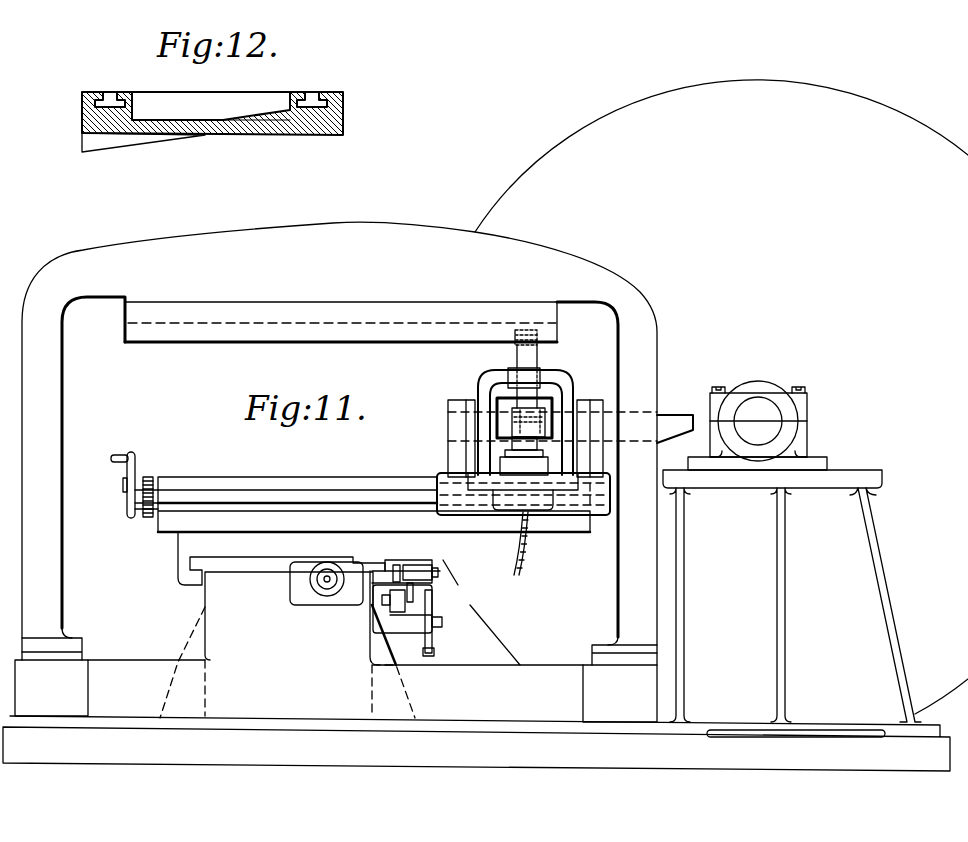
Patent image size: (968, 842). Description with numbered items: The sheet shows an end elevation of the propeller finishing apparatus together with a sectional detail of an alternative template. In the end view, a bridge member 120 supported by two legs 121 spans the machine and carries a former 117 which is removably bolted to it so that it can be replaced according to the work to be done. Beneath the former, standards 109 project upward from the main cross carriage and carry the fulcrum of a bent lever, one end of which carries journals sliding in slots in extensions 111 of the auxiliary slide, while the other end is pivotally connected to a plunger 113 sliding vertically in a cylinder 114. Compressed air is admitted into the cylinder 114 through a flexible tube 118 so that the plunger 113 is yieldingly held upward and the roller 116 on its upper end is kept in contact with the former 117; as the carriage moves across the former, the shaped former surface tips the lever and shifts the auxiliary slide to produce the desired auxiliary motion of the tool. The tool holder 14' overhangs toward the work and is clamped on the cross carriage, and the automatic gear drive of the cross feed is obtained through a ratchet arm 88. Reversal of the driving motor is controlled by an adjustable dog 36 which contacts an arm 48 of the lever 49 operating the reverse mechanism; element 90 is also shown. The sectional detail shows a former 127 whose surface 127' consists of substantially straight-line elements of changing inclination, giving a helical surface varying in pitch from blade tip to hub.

In FIG. 11, the tool holder 14' is at (676, 409).
In FIG. 11, the adjustable dog 36 is at (410, 566).
In FIG. 11, the arm of lever 48 is at (428, 603).
In FIG. 11, the lever 49 is at (433, 639).
In FIG. 11, the ratchet arm 88 is at (422, 564).
In FIG. 11, the lower bracket 90 is at (395, 612).
In FIG. 11, the standards 109 is at (422, 348).
In FIG. 11, the extensions of slide 111 is at (423, 447).
In FIG. 11, the plunger 113 is at (527, 357).
In FIG. 11, the cylinder 114 is at (507, 499).
In FIG. 11, the roller 116 is at (540, 334).
In FIG. 11, the former 117 is at (172, 338).
In FIG. 11, the flexible tube 118 is at (527, 556).
In FIG. 11, the bridge member 120 is at (400, 238).
In FIG. 11, the legs 121 is at (44, 398).
In FIG. 12, the former 127 is at (316, 132).
In FIG. 12, the surface of former 127' is at (143, 155).